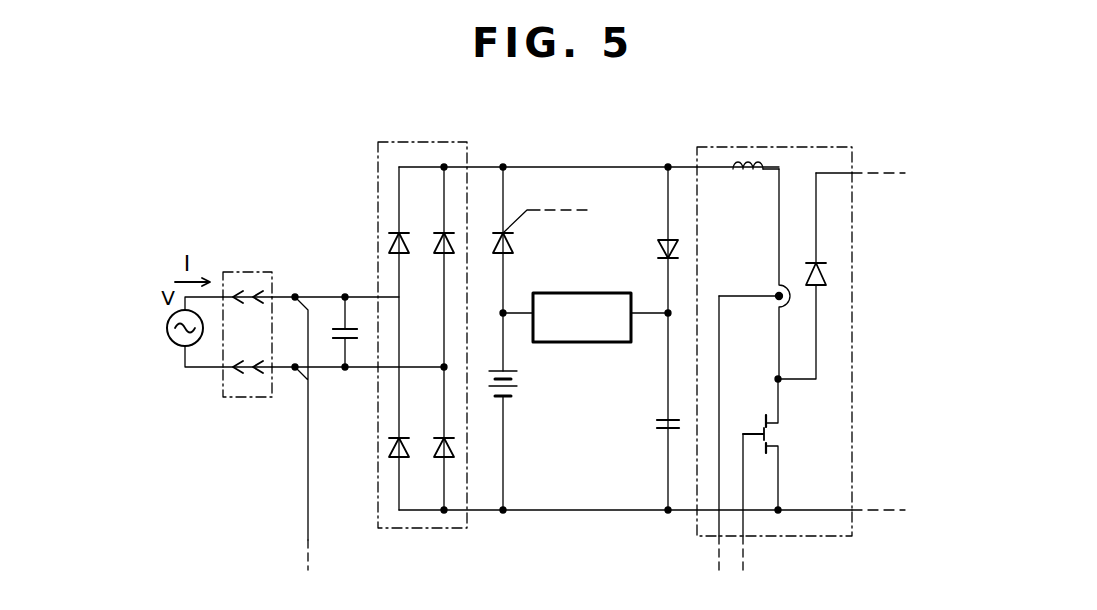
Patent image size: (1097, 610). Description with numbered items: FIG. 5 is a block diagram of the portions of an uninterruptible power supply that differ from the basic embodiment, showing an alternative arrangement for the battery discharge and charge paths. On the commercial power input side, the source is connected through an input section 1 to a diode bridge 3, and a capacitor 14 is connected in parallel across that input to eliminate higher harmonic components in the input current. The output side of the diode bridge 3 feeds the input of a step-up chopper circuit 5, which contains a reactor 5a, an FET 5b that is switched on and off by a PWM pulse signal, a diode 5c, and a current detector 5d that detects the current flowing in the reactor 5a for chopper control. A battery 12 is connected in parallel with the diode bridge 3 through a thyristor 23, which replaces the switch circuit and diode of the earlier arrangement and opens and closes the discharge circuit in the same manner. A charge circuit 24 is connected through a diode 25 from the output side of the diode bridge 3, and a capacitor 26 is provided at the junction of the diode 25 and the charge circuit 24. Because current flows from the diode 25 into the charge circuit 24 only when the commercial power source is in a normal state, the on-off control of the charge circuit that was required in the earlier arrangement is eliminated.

The AC input switch / connector 1 is at (251, 268).
The diode bridge 3 is at (429, 140).
The step-up chopper circuit 5 is at (829, 145).
The reactor 5a is at (753, 176).
The FET 5b is at (763, 426).
The diode 5c is at (810, 273).
The current detector 5d is at (776, 296).
The battery 12 is at (519, 384).
The capacitor 14 is at (335, 334).
The thyristor 23 is at (518, 244).
The charge circuit 24 is at (591, 293).
The diode 25 is at (660, 252).
The capacitor 26 is at (657, 424).